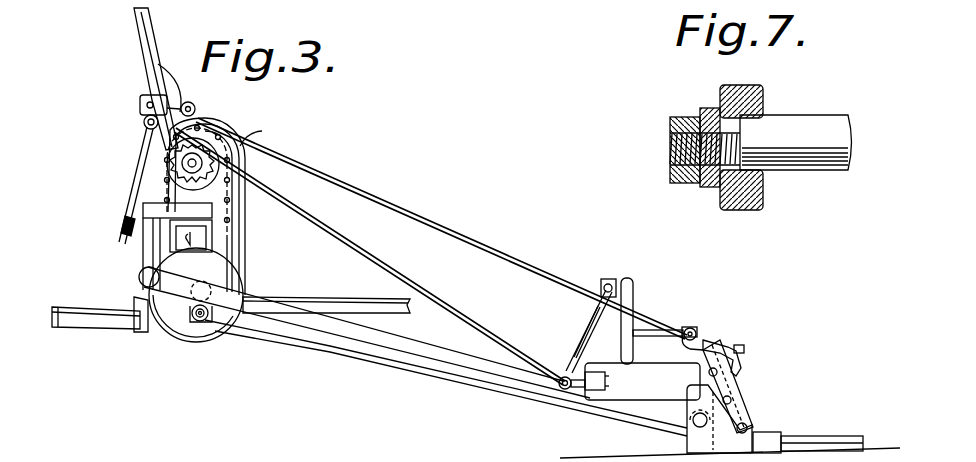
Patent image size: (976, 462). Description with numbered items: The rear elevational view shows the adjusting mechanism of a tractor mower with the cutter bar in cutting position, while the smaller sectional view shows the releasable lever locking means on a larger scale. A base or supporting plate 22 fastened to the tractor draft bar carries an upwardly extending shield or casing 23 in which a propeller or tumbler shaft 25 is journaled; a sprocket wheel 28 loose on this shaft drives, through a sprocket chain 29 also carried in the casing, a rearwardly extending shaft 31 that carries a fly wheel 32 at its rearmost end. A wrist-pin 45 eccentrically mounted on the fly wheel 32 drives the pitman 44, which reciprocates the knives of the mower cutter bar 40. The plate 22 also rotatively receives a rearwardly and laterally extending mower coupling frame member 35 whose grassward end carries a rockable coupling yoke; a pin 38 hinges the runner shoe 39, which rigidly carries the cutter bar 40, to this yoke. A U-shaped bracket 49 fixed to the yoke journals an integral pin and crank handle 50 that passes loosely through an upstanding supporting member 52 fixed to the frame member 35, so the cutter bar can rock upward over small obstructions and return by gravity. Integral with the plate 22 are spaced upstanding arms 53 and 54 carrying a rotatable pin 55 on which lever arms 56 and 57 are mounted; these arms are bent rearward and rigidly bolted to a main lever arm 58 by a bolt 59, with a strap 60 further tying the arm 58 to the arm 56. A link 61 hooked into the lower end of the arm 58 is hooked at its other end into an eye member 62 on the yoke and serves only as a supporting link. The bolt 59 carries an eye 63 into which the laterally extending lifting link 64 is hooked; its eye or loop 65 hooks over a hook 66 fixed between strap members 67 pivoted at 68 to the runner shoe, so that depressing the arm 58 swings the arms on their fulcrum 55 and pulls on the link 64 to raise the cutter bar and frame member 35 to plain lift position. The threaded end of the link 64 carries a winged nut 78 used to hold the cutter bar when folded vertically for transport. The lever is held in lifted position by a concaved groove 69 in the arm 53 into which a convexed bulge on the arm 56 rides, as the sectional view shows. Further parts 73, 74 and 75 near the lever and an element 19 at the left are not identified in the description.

In FIG. 3, the arm 58 is at (134, 22).
In FIG. 3, the strap 60 is at (138, 38).
In FIG. 3, the bolt 59 is at (150, 66).
In FIG. 3, the clamp block 75 is at (141, 100).
In FIG. 3, the collar 74 is at (143, 119).
In FIG. 3, the pin 73 is at (146, 126).
In FIG. 3, the eye 63 is at (196, 109).
In FIG. 3, the shield or casing 23 is at (246, 153).
In FIG. 3, the arm 57 is at (250, 140).
In FIG. 3, the upstanding arm 54 is at (225, 218).
In FIG. 3, the sprocket wheel 28 is at (175, 157).
In FIG. 3, the arm 56 is at (175, 160).
In FIG. 7, the arm 56 is at (702, 108).
In FIG. 3, the propeller or tumbler shaft 25 is at (186, 153).
In FIG. 3, the pin 55 is at (128, 228).
In FIG. 7, the pin 55 is at (812, 170).
In FIG. 3, the concaved groove 69 is at (128, 238).
In FIG. 7, the concaved groove 69 is at (762, 160).
In FIG. 3, the sprocket chain 29 is at (236, 238).
In FIG. 3, the rearwardly extending shaft 31 is at (244, 283).
In FIG. 3, the fly wheel 32 is at (184, 324).
In FIG. 3, the wrist-pin 45 is at (210, 322).
In FIG. 3, the pitman 44 is at (320, 347).
In FIG. 3, the mower coupling frame member 35 is at (420, 372).
In FIG. 3, the rail 19 is at (90, 326).
In FIG. 3, the base or supporting plate 22 is at (142, 332).
In FIG. 3, the lifting link 64 is at (490, 248).
In FIG. 3, the link 61 is at (357, 254).
In FIG. 3, the integral pin and crank handle 50 is at (604, 280).
In FIG. 3, the U-shaped bracket 49 is at (601, 287).
In FIG. 3, the upstanding supporting member 52 is at (595, 312).
In FIG. 3, the eye member 62 is at (565, 391).
In FIG. 3, the pin 38 is at (688, 418).
In FIG. 3, the eye or loop 65 is at (688, 327).
In FIG. 3, the hook 66 is at (722, 345).
In FIG. 3, the winged nut 78 is at (746, 350).
In FIG. 3, the strap members 67 is at (737, 394).
In FIG. 3, the pivot 68 is at (748, 427).
In FIG. 3, the runner shoe 39 is at (770, 436).
In FIG. 3, the mower cutter bar 40 is at (826, 432).
In FIG. 7, the upstanding arm 53 is at (764, 198).